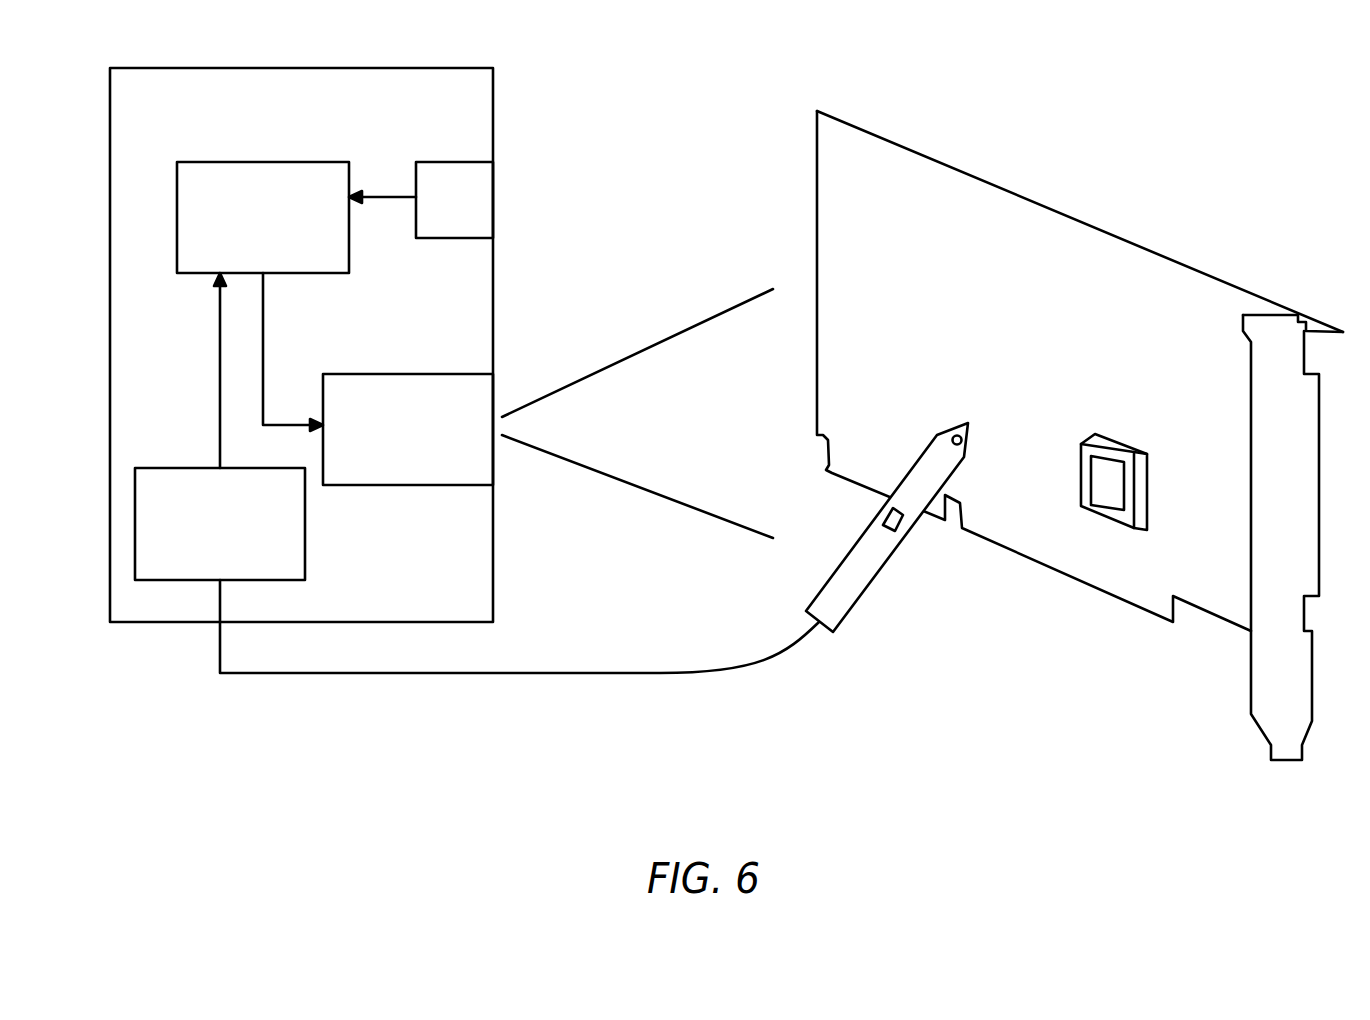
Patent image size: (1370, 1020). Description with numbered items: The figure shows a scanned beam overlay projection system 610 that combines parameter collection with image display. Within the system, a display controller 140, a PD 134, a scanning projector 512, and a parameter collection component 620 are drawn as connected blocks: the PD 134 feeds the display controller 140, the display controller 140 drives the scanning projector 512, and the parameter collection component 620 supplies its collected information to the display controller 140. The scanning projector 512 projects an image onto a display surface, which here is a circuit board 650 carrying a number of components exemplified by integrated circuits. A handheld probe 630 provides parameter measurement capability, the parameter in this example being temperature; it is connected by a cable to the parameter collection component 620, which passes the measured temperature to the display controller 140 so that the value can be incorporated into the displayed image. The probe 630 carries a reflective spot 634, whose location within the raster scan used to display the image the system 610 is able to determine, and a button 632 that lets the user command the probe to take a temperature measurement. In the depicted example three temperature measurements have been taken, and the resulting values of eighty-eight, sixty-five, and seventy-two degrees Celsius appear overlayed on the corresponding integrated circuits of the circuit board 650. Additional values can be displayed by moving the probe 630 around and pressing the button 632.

The scanned beam overlay projection system 610 is at (295, 68).
The display controller 140 is at (244, 162).
The PD 134 is at (440, 162).
The scanning projector 512 is at (405, 374).
The parameter collection component 620 is at (167, 468).
The probe 630 is at (861, 596).
The button 632 is at (906, 527).
The reflective spot 634 is at (958, 446).
The circuit board 650 is at (1030, 200).